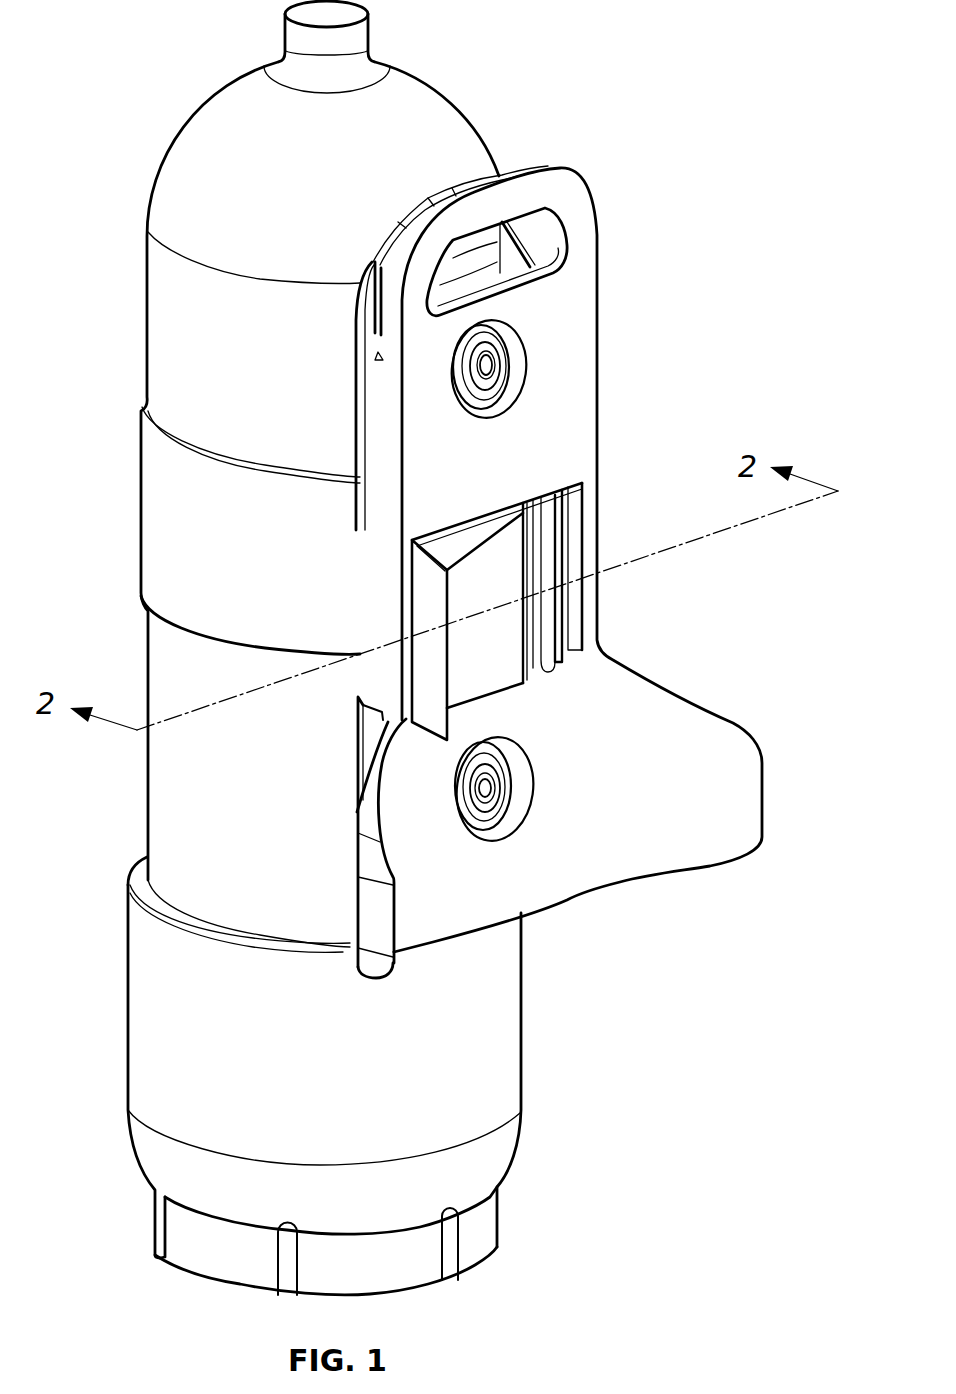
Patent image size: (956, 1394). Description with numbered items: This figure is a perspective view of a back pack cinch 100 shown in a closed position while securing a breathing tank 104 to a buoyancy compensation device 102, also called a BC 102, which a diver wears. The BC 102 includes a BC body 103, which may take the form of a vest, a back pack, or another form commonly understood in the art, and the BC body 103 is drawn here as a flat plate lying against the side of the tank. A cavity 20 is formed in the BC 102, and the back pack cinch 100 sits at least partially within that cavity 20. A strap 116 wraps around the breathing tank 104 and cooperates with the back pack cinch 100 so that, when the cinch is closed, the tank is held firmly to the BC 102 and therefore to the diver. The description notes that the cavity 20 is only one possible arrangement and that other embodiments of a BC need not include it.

The breathing tank 104 is at (283, 647).
The buoyancy compensation device 102 is at (572, 572).
The BC body 103 is at (568, 349).
The cavity 20 is at (596, 493).
The back pack cinch 100 is at (528, 579).
The strap 116 is at (178, 570).